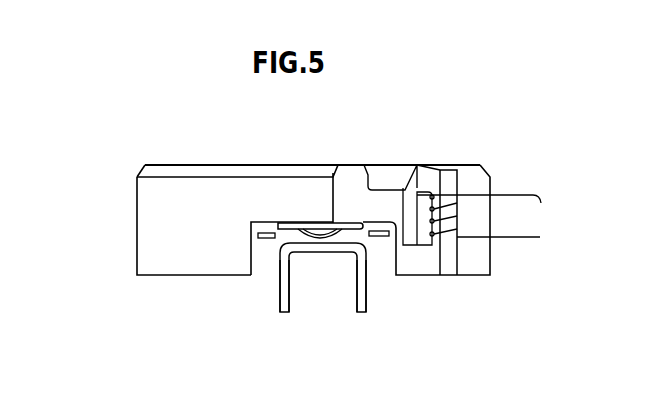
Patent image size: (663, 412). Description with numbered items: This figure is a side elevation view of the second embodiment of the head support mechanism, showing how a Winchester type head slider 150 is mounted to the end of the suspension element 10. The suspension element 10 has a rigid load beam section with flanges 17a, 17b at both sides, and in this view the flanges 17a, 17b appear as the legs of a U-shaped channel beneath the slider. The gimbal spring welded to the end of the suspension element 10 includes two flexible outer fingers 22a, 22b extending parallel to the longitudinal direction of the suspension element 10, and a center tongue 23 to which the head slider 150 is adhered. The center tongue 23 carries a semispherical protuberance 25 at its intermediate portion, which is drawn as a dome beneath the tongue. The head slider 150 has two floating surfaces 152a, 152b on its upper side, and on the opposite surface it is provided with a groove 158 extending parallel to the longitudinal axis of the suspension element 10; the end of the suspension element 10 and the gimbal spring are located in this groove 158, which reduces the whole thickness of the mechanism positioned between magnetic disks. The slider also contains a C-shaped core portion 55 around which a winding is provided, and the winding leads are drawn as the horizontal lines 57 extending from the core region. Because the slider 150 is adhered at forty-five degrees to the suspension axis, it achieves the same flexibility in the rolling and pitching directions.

The head slider 150 is at (133, 218).
The floating surface 152a is at (453, 165).
The floating surface 152b is at (299, 163).
The groove 158 is at (266, 258).
The C-shaped core portion 55 is at (452, 182).
The spring / conductor 57 is at (489, 216).
The center tongue 23 is at (356, 232).
The semispherical protuberance 25 is at (321, 240).
The flexible outer finger 22a is at (383, 238).
The flexible outer finger 22b is at (258, 236).
The suspension element 10 is at (374, 307).
The flange 17a is at (355, 309).
The flange 17b is at (287, 308).